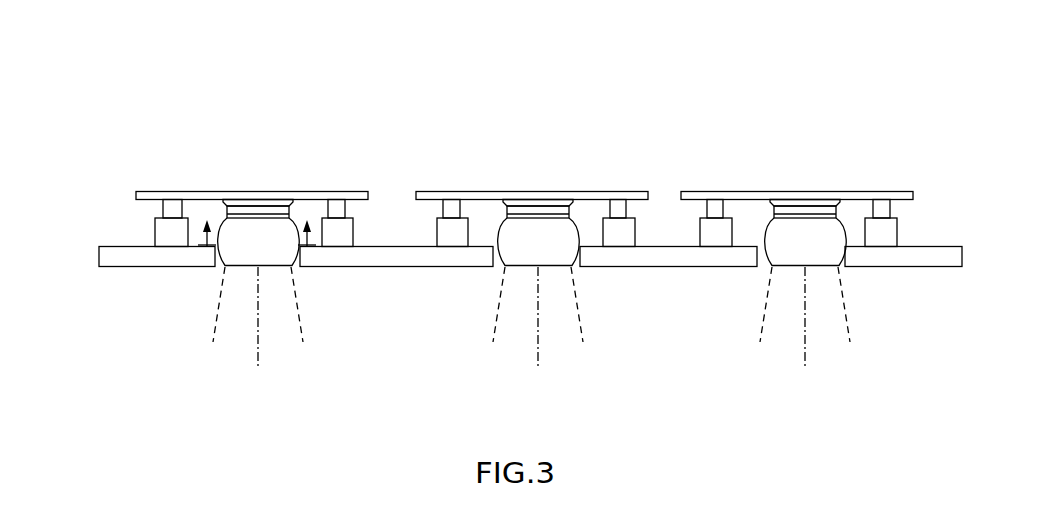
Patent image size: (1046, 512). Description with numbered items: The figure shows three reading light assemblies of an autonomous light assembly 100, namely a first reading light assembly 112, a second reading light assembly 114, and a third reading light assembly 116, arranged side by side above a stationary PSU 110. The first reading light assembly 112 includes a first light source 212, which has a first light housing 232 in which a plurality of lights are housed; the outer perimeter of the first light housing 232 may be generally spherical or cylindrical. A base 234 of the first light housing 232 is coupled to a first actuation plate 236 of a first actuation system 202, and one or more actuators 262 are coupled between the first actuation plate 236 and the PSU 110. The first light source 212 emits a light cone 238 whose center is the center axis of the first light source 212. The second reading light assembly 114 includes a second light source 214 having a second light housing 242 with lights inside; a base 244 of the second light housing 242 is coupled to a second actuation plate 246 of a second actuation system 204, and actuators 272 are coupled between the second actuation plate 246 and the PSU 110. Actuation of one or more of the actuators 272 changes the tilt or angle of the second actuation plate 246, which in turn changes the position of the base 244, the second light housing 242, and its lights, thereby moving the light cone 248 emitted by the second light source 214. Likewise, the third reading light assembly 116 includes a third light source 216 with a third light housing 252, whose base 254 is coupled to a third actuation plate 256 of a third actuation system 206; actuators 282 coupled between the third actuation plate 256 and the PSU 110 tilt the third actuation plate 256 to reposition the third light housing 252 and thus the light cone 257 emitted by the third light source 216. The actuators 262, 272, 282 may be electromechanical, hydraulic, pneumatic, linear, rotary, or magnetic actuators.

The autonomous light assembly 100 is at (118, 78).
The PSU 110 is at (380, 256).
The first reading light assembly 112 is at (304, 165).
The second reading light assembly 114 is at (587, 158).
The third reading light assembly 116 is at (856, 183).
The first actuation system 202 is at (128, 209).
The second actuation system 204 is at (413, 210).
The third actuation system 206 is at (690, 216).
The first light source 212 is at (297, 269).
The second light source 214 is at (575, 269).
The third light source 216 is at (840, 269).
The first light housing 232 is at (281, 230).
The base 234 is at (248, 199).
The first actuation plate 236 is at (192, 199).
The light cone 238 is at (220, 295).
The second light housing 242 is at (560, 228).
The base 244 is at (526, 199).
The second actuation plate 246 is at (486, 199).
The light cone 248 is at (493, 330).
The third light housing 252 is at (828, 228).
The base 254 is at (793, 199).
The third actuation plate 256 is at (752, 199).
The light cone 257 is at (760, 332).
The actuators 262 is at (164, 233).
The actuators 272 is at (450, 230).
The actuators 282 is at (707, 236).